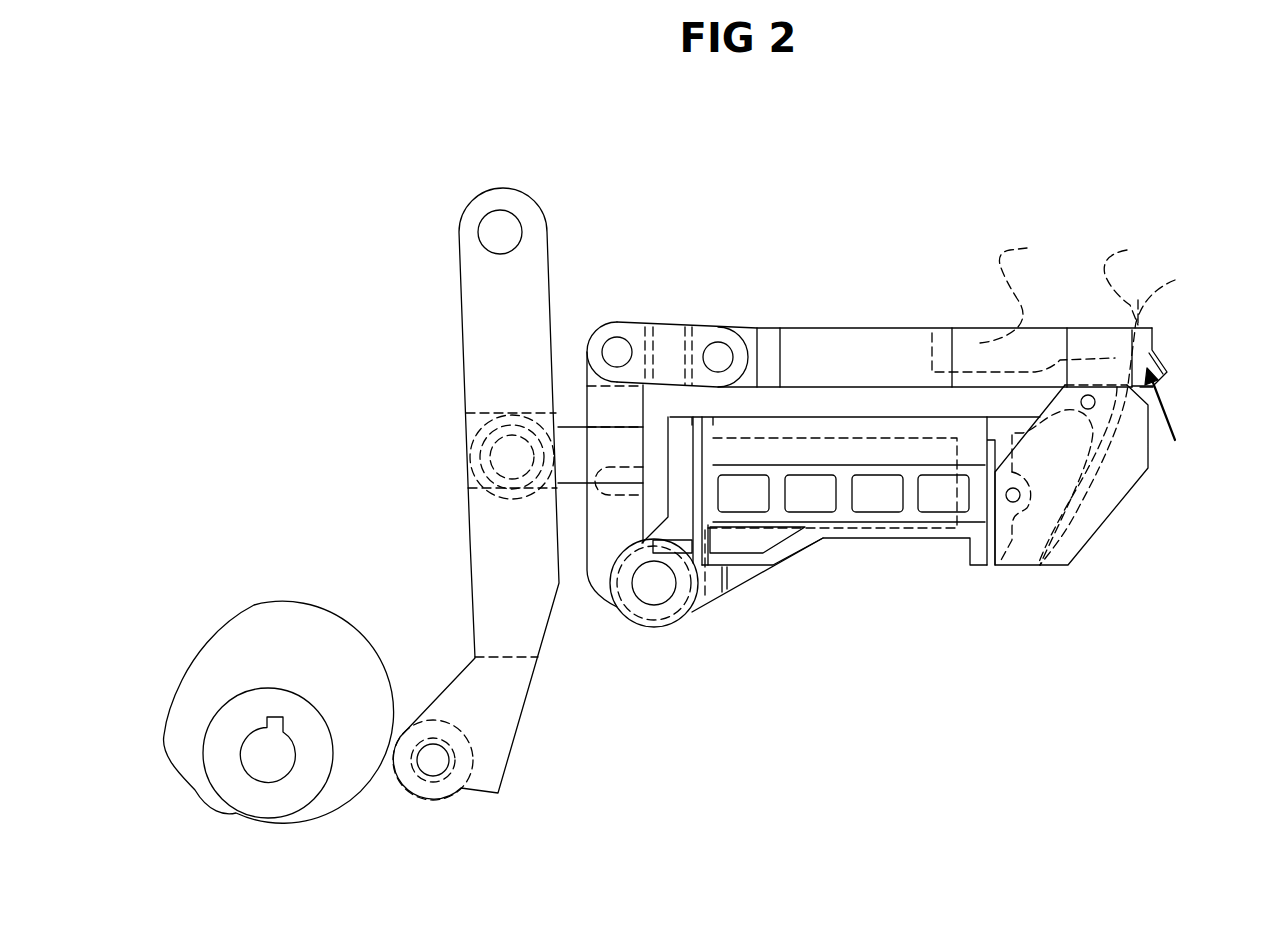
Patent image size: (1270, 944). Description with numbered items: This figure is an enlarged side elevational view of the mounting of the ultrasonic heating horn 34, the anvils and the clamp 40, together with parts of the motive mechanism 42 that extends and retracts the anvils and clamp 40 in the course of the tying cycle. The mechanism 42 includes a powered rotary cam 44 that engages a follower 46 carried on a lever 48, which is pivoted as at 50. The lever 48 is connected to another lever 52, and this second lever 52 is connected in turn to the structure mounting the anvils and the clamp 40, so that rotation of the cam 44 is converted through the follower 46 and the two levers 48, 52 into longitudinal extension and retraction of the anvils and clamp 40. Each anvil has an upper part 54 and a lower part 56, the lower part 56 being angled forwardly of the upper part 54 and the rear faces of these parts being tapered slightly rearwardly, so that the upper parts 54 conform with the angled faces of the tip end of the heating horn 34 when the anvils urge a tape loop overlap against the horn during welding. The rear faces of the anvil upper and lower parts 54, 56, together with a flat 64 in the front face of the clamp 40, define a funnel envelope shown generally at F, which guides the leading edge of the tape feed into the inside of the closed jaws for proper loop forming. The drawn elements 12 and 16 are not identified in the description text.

The engine 12 is at (1131, 282).
The belt 16 is at (1125, 416).
The ultra sonic heating horn 34 is at (1023, 303).
The clamp 40 is at (1145, 471).
The motive mechanism 42 is at (763, 313).
The powered rotary cam 44 is at (328, 623).
The follower 46 is at (407, 798).
The lever 48 is at (521, 366).
The pivot 50 is at (508, 230).
The lever 52 is at (627, 421).
The upper part 54 is at (1153, 337).
The lower part 56 is at (1165, 364).
The flat 64 is at (1153, 388).
The funnel envelope F is at (1167, 422).